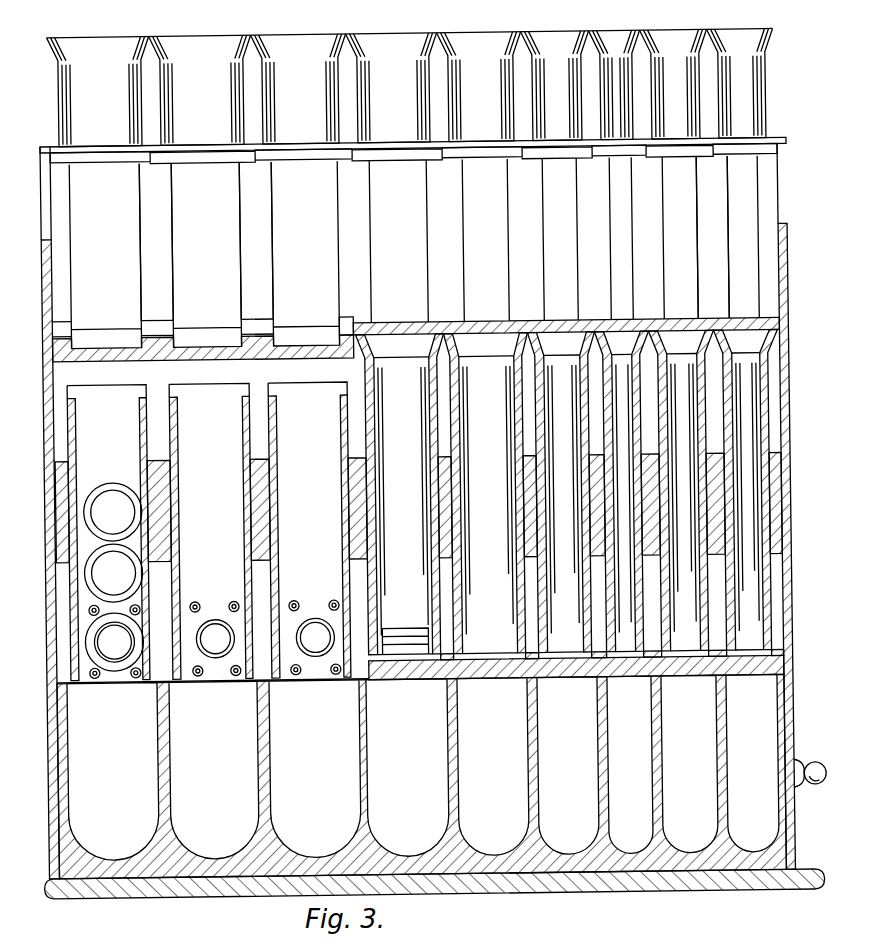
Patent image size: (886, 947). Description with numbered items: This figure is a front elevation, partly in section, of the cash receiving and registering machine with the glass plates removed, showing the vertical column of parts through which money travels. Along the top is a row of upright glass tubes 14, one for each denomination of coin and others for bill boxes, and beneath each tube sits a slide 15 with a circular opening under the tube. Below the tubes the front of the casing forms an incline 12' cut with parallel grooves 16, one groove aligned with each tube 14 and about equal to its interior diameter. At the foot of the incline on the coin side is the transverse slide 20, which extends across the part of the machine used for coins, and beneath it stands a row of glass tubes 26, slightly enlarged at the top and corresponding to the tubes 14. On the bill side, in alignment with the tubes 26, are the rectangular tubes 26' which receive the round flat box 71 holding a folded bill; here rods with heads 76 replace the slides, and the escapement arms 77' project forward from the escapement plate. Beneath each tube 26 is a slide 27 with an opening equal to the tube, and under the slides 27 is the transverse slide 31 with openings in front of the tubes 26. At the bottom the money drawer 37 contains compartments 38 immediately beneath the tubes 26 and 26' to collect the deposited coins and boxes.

The tubes 14 is at (281, 38).
The slide 15 is at (288, 156).
The grooves 16 is at (414, 252).
The incline 12' is at (434, 241).
The transverse bar or slide 20 is at (503, 337).
The tubes 26 is at (568, 491).
The tubes 26' is at (209, 531).
The round flat box 71 is at (133, 575).
The heads 76 is at (210, 640).
The arms 77' is at (215, 639).
The slide 27 is at (475, 666).
The transverse bar or slide 31 is at (555, 675).
The money pits or compartments 38 is at (421, 776).
The money till or drawer 37 is at (436, 889).